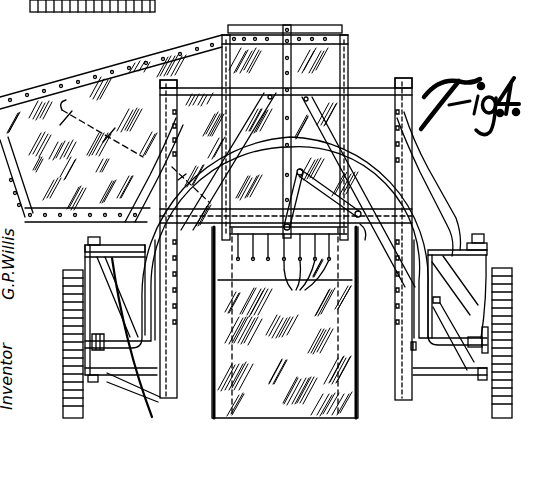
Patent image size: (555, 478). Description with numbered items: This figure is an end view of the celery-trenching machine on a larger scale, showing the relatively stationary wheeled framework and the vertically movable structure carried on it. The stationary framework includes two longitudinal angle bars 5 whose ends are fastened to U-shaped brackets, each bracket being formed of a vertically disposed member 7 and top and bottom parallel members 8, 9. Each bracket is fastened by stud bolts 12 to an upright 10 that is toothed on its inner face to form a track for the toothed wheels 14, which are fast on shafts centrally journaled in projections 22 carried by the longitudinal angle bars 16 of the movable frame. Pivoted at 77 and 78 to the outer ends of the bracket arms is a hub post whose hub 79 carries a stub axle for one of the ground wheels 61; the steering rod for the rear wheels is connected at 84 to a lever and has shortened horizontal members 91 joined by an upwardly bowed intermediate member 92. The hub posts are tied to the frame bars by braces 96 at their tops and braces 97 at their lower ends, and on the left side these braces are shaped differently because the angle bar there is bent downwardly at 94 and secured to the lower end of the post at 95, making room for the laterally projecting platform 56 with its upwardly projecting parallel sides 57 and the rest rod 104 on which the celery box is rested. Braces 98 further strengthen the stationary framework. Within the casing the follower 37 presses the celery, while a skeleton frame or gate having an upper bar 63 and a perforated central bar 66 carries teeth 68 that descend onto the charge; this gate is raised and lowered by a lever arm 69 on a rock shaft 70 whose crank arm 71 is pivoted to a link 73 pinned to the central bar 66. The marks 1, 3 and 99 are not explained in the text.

The ground wheels 61 is at (30, 11).
The rest rod 104 is at (5, 97).
The upwardly projecting parallel sides 57 is at (28, 160).
The laterally projecting platform 56 is at (118, 129).
The braces 98 is at (145, 196).
The upright 10 is at (160, 85).
The upper bar 63 is at (347, 29).
The upwardly bowed intermediate member 92 is at (283, 137).
The central bar 66 is at (286, 113).
The lever arm 69 is at (433, 27).
The rod connection 84 is at (272, 6).
The member 99 is at (322, 6).
The member 3 is at (413, 6).
The member 1 is at (442, 6).
The projections 22 is at (508, 6).
The stud bolts 12 is at (152, 288).
The link 73 is at (296, 198).
The crank arm 71 is at (344, 163).
The rock shaft 70 is at (364, 200).
The longitudinally disposed angle bars 16 is at (225, 250).
The teeth or downwardly extending projections 68 is at (285, 288).
The toothed wheels 14 is at (168, 265).
The follower 37 is at (302, 209).
The hub post pivot 77 is at (88, 241).
The hub 79 is at (93, 263).
The top parallel member 8 is at (448, 248).
The braces 96 is at (514, 228).
The downward bend 94 is at (140, 307).
The braces 97 is at (92, 347).
The hub post pivot 78 is at (93, 383).
The bottom parallel member 9 is at (452, 368).
The shortened horizontal members 91 is at (442, 368).
The vertically disposed member 7 is at (413, 358).
The angle bars 5 is at (165, 375).
The securing point 95 is at (160, 400).